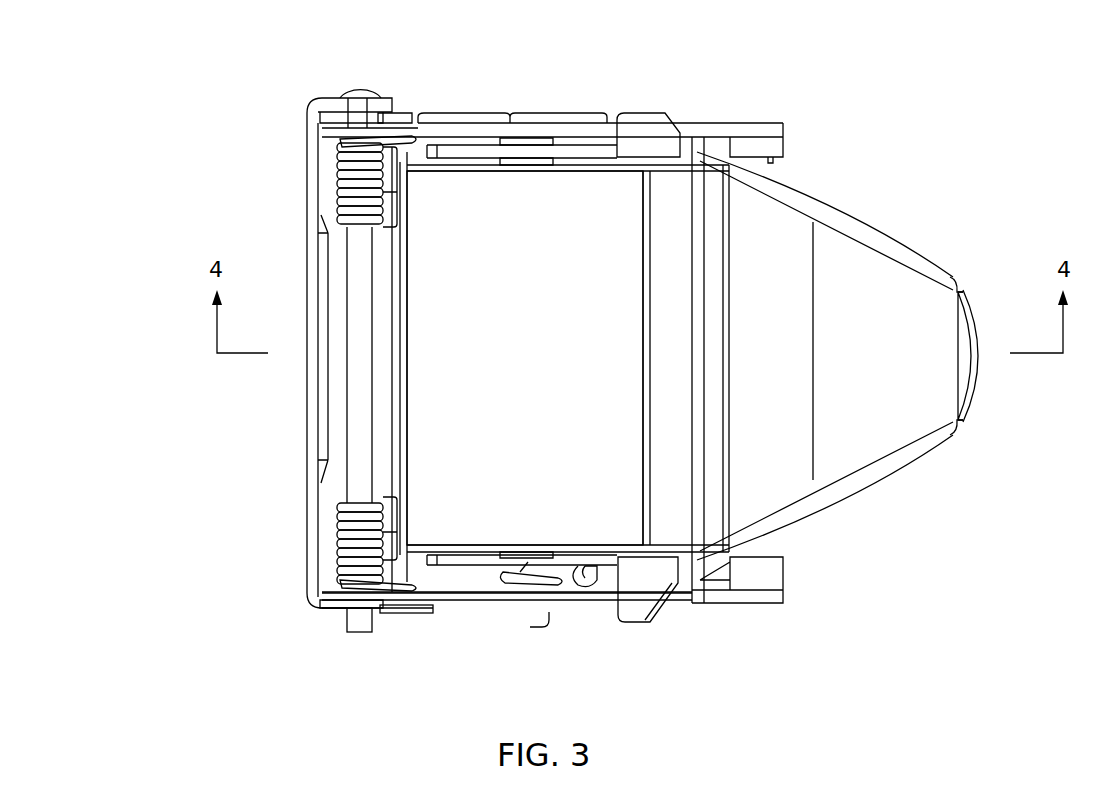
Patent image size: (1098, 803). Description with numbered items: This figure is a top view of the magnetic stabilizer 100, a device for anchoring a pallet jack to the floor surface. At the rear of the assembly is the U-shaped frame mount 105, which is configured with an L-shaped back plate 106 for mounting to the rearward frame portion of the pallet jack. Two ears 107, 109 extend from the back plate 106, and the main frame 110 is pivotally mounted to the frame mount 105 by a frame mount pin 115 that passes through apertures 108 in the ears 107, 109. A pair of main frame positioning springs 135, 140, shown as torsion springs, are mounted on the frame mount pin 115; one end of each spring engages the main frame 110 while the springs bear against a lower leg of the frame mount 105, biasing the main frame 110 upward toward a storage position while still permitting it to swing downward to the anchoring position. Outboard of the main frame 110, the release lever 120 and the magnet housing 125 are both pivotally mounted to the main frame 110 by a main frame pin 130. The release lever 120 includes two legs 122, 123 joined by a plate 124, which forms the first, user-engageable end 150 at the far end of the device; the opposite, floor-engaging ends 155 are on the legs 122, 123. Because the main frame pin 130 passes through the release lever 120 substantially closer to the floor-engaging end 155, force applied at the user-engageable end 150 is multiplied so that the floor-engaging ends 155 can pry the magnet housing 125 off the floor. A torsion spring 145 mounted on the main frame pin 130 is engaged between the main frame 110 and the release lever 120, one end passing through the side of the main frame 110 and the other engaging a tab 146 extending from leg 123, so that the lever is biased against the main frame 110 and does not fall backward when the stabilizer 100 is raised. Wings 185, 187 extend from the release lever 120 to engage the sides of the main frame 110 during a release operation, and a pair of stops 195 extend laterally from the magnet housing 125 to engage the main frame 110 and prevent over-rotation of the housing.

The magnetic stabilizer 100 is at (925, 172).
The U-shaped frame mount 105 is at (312, 395).
The L-shaped back plate 106 is at (307, 445).
The ear 107 is at (317, 612).
The aperture 108 is at (380, 98).
The ear 109 is at (315, 104).
The main frame 110 is at (730, 603).
The frame mount pin 115 is at (360, 480).
The release lever 120 is at (873, 467).
The leg 122 is at (478, 150).
The leg 123 is at (485, 558).
The plate 124 is at (875, 345).
The magnet housing 125 is at (428, 606).
The main frame pin 130 is at (523, 570).
The main frame positioning spring 135 is at (345, 192).
The main frame positioning spring 140 is at (355, 553).
The torsion spring 145 is at (530, 590).
The tab 146 is at (580, 573).
The user-engageable end 150 is at (983, 373).
The floor-engaging end 155 is at (440, 155).
The wing 185 is at (645, 578).
The wing 187 is at (643, 133).
The stop 195 is at (402, 613).